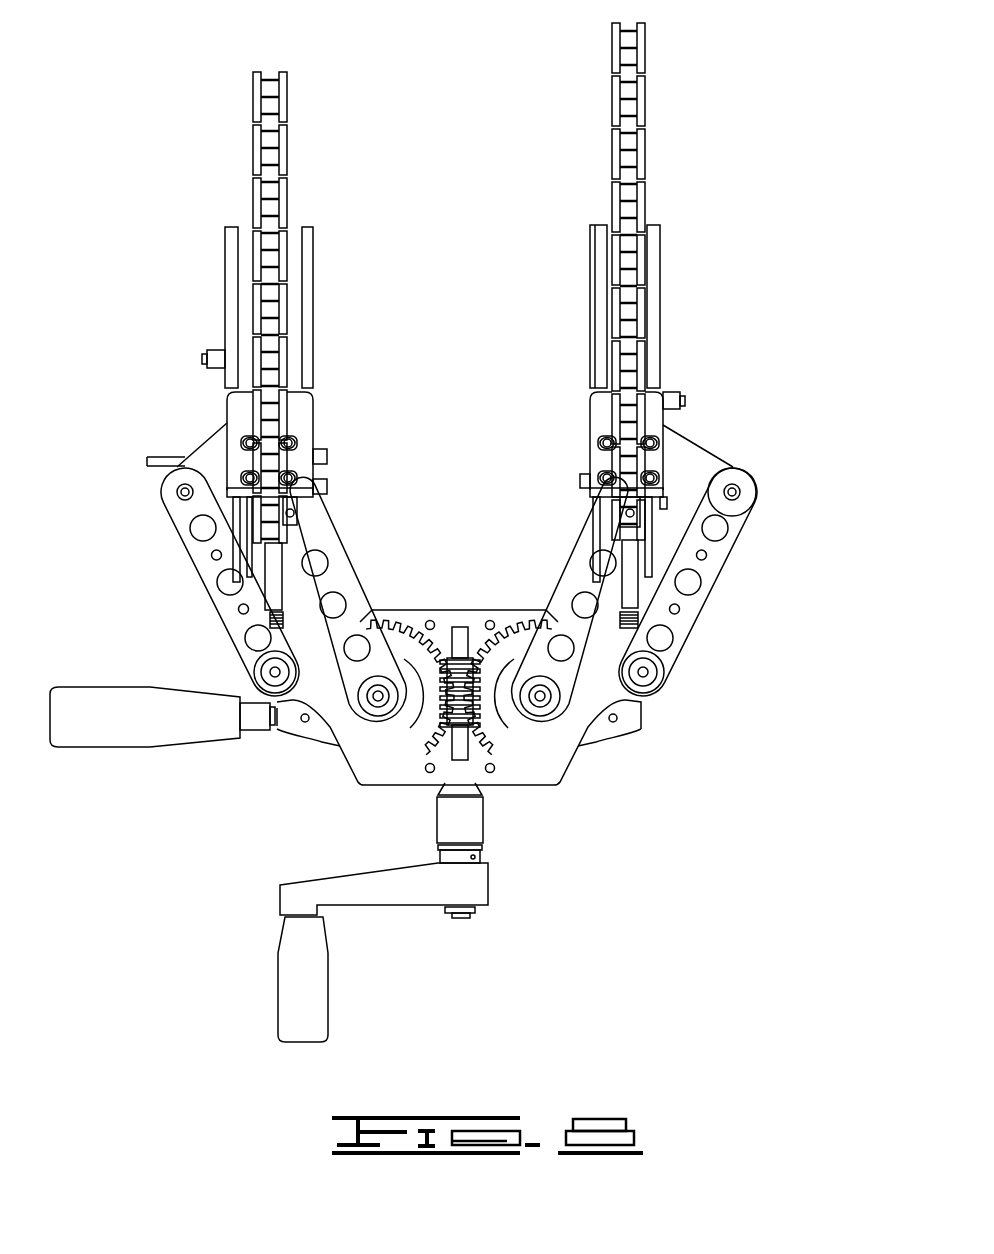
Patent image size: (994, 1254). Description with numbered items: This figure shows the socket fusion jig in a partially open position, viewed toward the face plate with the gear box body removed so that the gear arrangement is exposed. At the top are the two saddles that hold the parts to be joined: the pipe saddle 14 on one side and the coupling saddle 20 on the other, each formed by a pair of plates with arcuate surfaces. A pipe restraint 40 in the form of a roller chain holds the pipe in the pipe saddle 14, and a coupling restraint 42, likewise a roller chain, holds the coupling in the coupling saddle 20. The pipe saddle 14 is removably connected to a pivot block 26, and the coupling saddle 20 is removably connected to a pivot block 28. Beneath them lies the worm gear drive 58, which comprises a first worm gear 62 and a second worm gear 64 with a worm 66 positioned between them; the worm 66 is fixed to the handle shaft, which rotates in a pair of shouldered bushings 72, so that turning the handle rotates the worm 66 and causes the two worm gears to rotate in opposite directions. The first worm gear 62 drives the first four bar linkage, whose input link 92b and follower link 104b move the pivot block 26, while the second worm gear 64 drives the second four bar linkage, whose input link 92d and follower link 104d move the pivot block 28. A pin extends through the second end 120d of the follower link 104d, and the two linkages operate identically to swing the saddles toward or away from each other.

The pipe restraint 40 is at (256, 74).
The coupling restraint 42 is at (645, 40).
The pipe saddle 14 is at (225, 260).
The coupling saddle 20 is at (661, 270).
The pivot block 26 is at (228, 414).
The pivot block 28 is at (688, 428).
The second end of follower link 120d is at (755, 484).
The follower link 104b is at (218, 600).
The follower link 104d is at (698, 614).
The input link 92b is at (328, 530).
The input link 92d is at (585, 682).
The second worm gear 64 is at (504, 636).
The first worm gear 62 is at (405, 718).
The worm gear drive 58 is at (508, 728).
The worm 66 is at (459, 657).
The shouldered bushings 72 is at (440, 610).